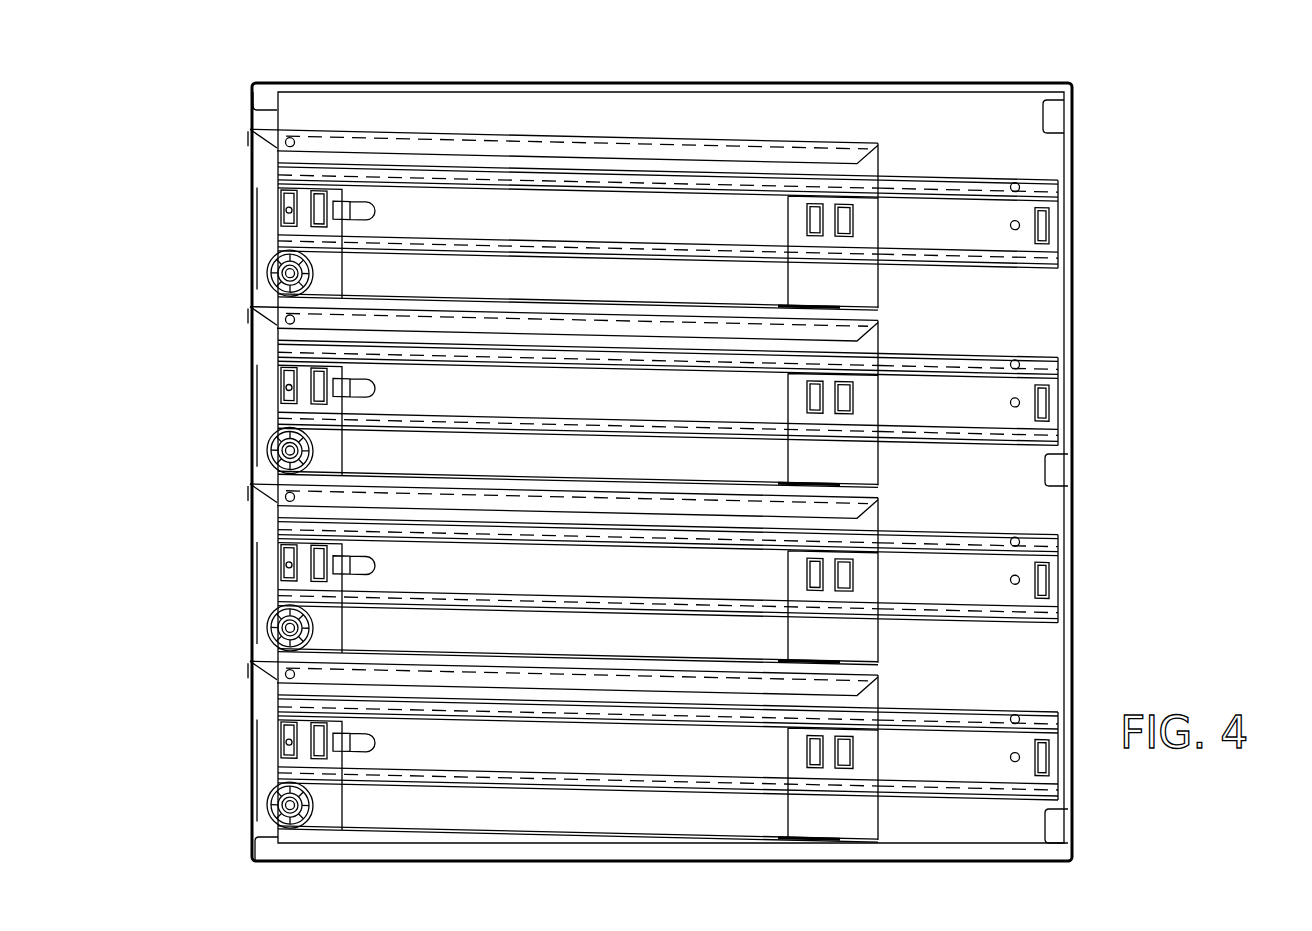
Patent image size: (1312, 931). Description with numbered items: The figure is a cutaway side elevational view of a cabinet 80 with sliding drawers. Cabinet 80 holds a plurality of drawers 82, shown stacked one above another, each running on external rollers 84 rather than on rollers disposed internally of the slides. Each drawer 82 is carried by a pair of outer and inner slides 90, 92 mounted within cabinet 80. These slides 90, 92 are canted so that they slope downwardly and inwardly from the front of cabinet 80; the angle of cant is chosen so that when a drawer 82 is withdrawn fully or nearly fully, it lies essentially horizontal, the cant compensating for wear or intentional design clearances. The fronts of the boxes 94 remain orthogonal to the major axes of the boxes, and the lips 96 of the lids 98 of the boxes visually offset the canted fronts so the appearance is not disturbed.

The cabinet 80 is at (1135, 293).
The drawer 82 is at (633, 174).
The external roller 84 is at (266, 274).
The outer slide 90 is at (977, 187).
The inner slide 92 is at (997, 217).
The box 94 is at (485, 162).
The lip 96 is at (247, 140).
The lid 98 is at (405, 143).